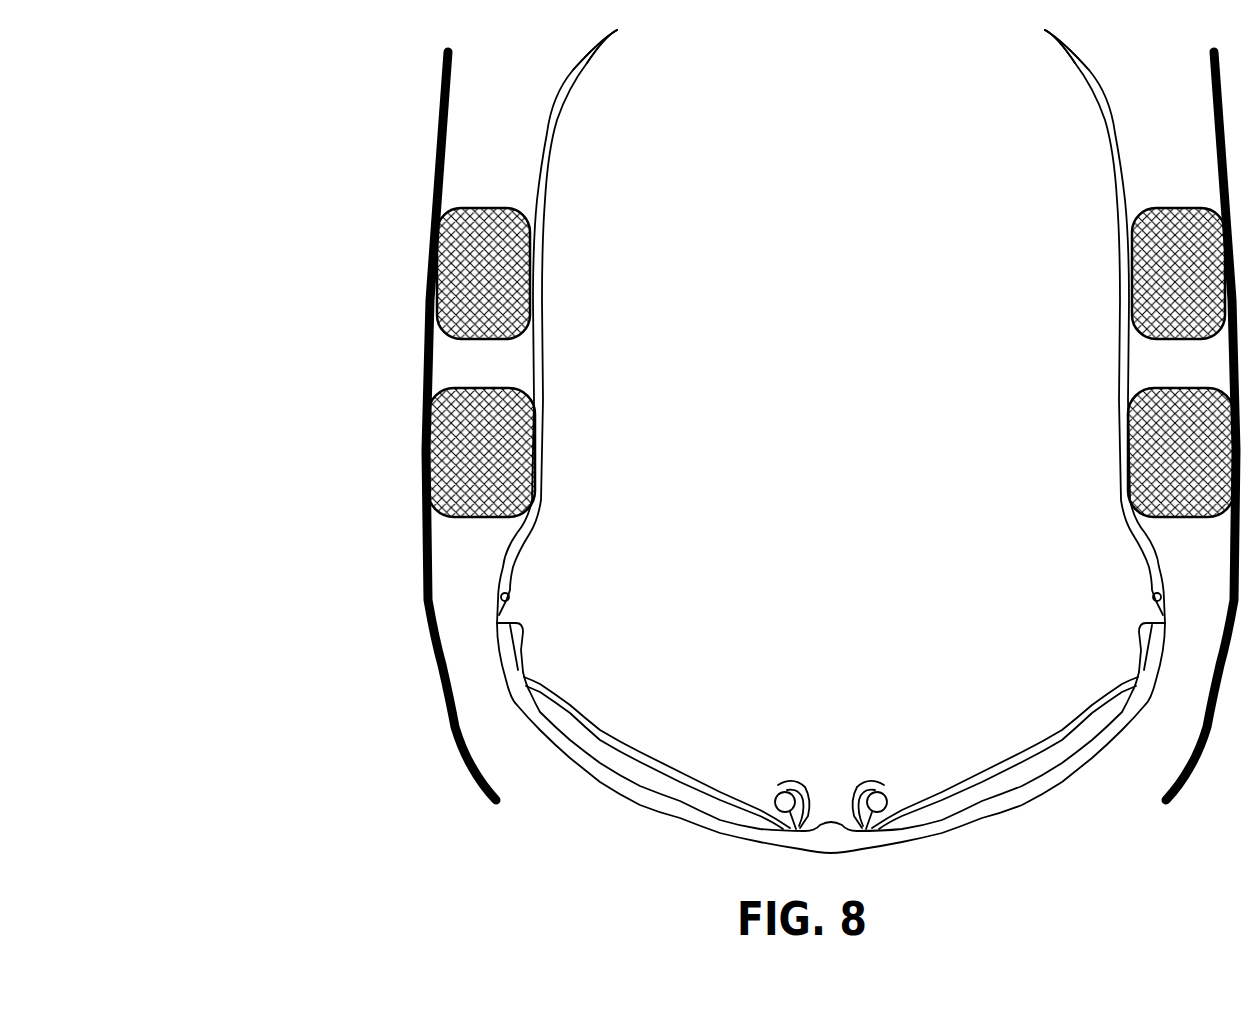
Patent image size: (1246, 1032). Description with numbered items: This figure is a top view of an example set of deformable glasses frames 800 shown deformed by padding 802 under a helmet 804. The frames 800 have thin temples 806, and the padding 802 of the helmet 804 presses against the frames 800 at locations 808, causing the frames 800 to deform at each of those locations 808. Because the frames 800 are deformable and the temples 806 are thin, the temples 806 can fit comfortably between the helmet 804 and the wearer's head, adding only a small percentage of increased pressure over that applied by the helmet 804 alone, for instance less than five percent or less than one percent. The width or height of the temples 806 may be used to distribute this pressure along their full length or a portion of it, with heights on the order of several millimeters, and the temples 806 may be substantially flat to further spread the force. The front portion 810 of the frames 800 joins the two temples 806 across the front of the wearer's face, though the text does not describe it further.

The glasses frames 800 is at (189, 60).
The padding 802 is at (481, 208).
The helmet 804 is at (422, 592).
The temples 806 is at (600, 52).
The locations 808 is at (571, 262).
The frame front 810 is at (597, 783).